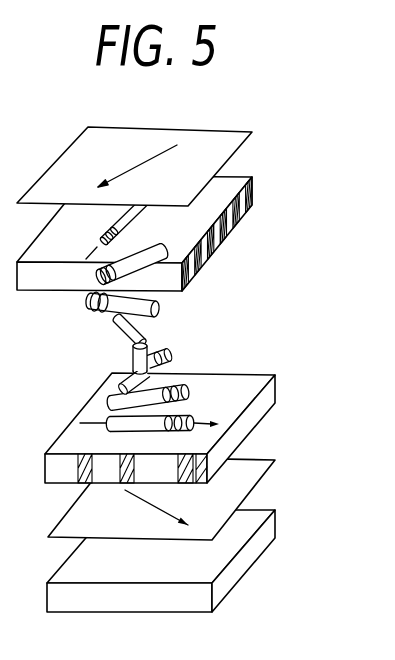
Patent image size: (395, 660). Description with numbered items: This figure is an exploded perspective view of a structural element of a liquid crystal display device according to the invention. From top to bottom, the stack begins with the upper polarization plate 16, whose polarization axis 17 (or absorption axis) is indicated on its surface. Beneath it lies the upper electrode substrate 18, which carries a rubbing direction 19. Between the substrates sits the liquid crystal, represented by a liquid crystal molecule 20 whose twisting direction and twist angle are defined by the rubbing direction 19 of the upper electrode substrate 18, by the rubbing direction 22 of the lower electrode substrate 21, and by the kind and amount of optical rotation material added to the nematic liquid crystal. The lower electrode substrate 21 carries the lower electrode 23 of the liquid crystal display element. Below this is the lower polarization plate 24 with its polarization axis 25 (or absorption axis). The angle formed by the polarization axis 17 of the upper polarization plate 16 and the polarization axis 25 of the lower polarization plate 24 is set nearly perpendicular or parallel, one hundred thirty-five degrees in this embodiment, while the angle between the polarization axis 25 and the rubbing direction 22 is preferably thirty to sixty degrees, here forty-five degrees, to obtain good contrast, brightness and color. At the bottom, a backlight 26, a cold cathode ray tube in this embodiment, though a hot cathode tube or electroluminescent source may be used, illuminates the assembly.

The upper polarization plate 16 is at (252, 132).
The polarization axis of upper polarization plate 17 is at (162, 155).
The upper electrode substrate 18 is at (245, 214).
The rubbing direction of upper electrode substrate 19 is at (140, 220).
The liquid crystal molecule 20 is at (152, 340).
The lower electrode substrate 21 is at (277, 376).
The rubbing direction of lower electrode substrate 22 is at (197, 421).
The lower electrode 23 is at (253, 492).
The lower polarization plate 24 is at (262, 493).
The polarization axis of lower polarization plate 25 is at (165, 510).
The backlight 26 is at (250, 567).